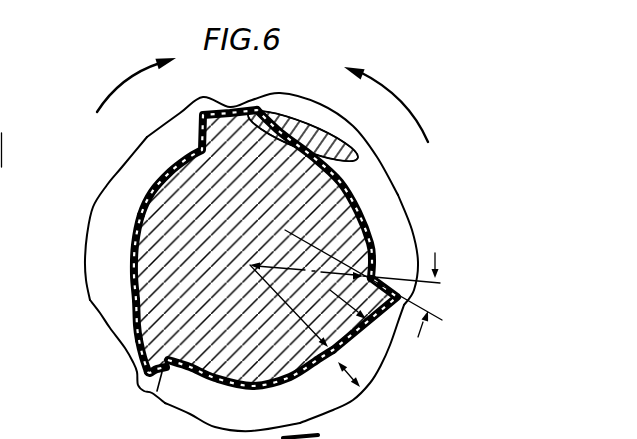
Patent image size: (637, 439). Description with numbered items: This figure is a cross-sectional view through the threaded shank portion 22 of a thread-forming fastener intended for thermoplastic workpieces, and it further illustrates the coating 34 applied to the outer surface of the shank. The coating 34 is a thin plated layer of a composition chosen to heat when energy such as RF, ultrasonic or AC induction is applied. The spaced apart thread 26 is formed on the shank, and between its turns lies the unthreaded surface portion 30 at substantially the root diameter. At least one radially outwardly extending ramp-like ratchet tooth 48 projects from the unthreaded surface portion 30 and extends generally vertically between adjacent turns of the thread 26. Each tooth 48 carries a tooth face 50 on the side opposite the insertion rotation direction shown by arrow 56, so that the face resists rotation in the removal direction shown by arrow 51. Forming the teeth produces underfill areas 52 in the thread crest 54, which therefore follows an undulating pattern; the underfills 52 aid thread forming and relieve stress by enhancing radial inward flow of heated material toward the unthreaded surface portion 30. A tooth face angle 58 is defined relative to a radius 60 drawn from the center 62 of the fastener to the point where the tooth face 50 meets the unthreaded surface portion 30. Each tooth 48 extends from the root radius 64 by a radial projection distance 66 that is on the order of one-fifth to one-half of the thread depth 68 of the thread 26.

The threaded shank portion 22 is at (92, 156).
The thread 26 is at (93, 257).
The unthreaded surface portion 30 is at (133, 290).
The coating 34 is at (139, 213).
The ratchet tooth 48 is at (131, 315).
The tooth face 50 is at (150, 390).
The arrow 51 is at (393, 96).
The underfill areas 52 is at (129, 352).
The thread crest 54 is at (137, 369).
The arrow 56 is at (117, 90).
The tooth face angle 58 is at (372, 283).
The radius 60 is at (328, 271).
The center 62 is at (250, 263).
The root radius 64 is at (258, 279).
The radial projection distance 66 is at (378, 344).
The thread depth 68 is at (340, 380).